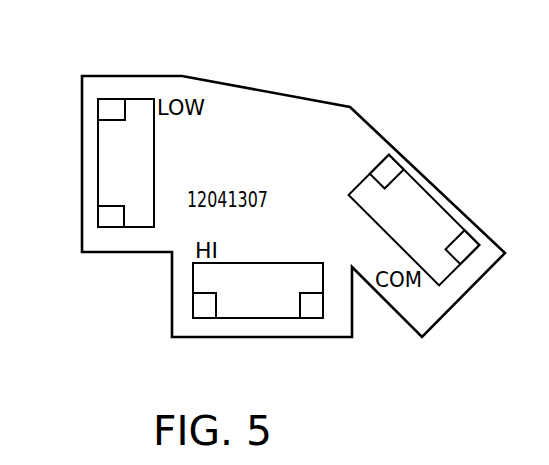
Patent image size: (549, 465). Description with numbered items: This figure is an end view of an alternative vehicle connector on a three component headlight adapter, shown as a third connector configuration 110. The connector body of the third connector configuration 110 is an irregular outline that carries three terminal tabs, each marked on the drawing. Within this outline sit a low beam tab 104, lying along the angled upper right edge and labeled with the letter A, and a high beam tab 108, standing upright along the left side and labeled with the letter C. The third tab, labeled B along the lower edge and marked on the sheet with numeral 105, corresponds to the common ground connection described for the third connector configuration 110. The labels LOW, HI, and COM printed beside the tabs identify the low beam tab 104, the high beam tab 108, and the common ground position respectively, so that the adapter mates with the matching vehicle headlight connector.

The third connector configuration 110 is at (267, 92).
The high beam tab 108 is at (117, 188).
The high range input terminal B 105 is at (242, 307).
The low beam tab 104 is at (433, 220).